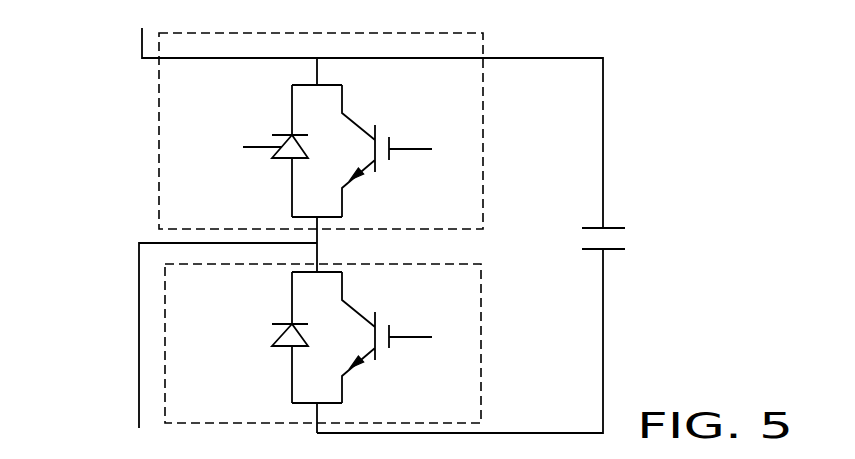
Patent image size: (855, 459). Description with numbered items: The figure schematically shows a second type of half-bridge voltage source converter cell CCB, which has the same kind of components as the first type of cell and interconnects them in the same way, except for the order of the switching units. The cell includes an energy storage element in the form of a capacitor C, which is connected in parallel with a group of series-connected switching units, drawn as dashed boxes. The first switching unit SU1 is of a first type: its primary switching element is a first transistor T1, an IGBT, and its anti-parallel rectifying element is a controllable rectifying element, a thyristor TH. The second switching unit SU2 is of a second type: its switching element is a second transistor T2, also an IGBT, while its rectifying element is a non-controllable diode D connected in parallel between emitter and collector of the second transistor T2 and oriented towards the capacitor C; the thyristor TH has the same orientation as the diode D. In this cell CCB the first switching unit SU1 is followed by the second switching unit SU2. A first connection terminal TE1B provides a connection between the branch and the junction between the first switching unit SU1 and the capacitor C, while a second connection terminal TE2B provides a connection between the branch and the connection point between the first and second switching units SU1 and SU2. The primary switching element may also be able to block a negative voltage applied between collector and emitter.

The first connection terminal TE1B is at (169, 40).
The second connection terminal TE2B is at (188, 337).
The second type of half-bridge converter cell CCB is at (620, 137).
The first switching unit SU1 is at (486, 163).
The second switching unit SU2 is at (482, 390).
The thyristor TH is at (262, 151).
The first transistor T1 is at (391, 151).
The second transistor T2 is at (391, 337).
The diode D is at (281, 337).
The capacitor C is at (584, 238).